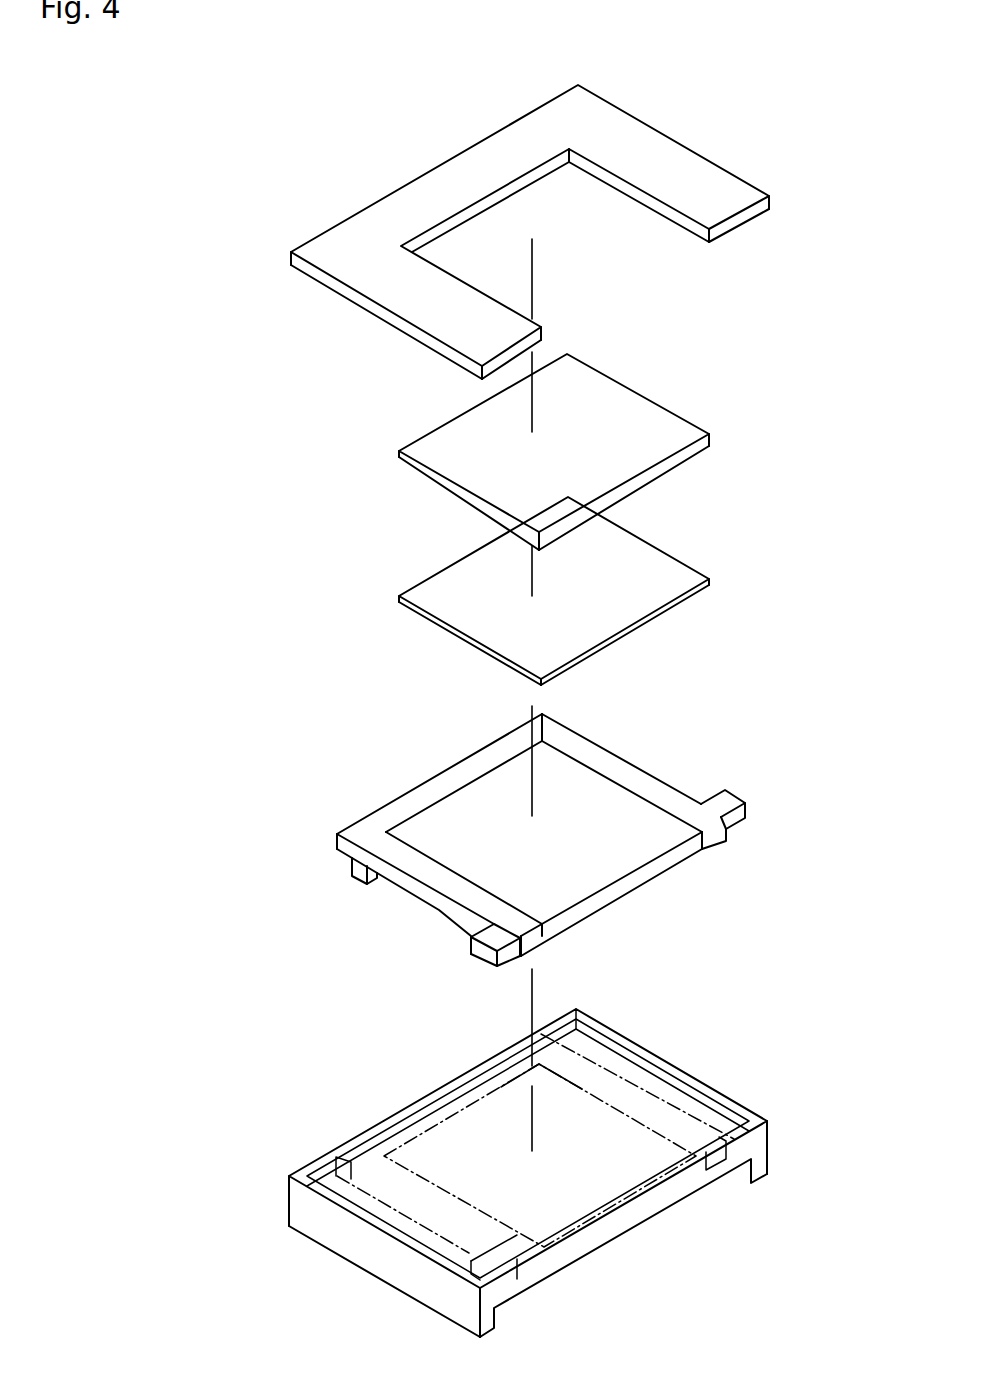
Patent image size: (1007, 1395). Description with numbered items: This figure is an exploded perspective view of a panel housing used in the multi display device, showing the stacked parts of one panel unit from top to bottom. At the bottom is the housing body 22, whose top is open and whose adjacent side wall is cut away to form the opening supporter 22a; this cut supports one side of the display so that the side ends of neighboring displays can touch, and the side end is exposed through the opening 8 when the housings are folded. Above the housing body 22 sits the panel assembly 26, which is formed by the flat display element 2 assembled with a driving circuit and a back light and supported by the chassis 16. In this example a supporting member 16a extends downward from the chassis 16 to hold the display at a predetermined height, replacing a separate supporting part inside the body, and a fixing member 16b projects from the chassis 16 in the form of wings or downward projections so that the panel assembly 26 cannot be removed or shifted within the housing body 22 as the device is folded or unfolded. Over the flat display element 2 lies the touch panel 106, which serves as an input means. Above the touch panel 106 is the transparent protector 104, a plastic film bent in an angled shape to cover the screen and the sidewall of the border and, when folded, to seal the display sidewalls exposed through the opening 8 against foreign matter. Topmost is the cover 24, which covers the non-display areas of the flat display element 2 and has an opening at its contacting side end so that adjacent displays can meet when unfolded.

The flat display element 2 is at (468, 812).
The opening 8 is at (678, 1183).
The chassis 16 is at (385, 885).
The supporting member 16a is at (352, 865).
The fixing member 16b is at (471, 953).
The housing body 22 is at (525, 1177).
The opening supporter 22a is at (565, 1237).
The cover 24 is at (417, 197).
The panel assembly 26 is at (487, 826).
The transparent protector 104 is at (672, 427).
The touch panel 106 is at (675, 573).